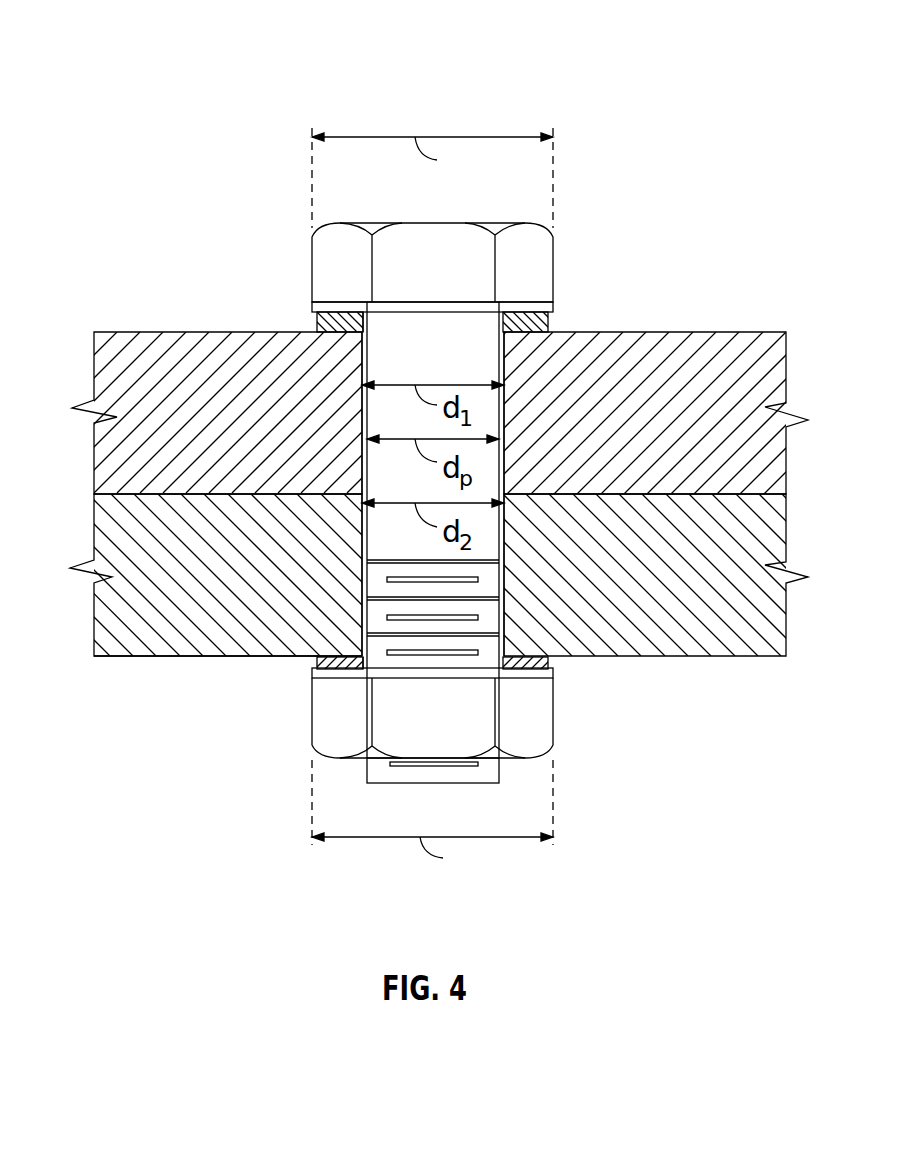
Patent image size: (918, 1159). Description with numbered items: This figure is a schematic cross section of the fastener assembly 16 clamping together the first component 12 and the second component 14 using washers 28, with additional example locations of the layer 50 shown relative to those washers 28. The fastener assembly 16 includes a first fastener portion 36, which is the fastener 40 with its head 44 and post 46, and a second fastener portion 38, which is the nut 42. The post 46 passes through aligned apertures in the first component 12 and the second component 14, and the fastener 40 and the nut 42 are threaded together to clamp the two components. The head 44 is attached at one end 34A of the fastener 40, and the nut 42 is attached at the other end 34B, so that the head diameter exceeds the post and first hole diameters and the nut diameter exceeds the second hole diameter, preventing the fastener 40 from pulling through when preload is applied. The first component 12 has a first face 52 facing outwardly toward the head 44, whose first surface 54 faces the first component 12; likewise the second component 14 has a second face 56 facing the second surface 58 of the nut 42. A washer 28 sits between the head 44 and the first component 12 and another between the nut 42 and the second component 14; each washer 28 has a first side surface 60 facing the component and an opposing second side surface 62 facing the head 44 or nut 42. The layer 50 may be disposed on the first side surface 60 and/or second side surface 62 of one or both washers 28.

The first component 12 is at (118, 465).
The second component 14 is at (117, 530).
The fastener assembly 16 is at (428, 496).
The washer 28 is at (530, 328).
The end of the fastener 34A is at (346, 88).
The another end of the fastener 34B is at (288, 822).
The first fastener portion 36 is at (428, 496).
The second fastener portion 38 is at (505, 727).
The fastener 40 is at (428, 496).
The nut 42 is at (545, 735).
The head 44 is at (556, 242).
The post 46 is at (412, 587).
The layer 50 is at (333, 302).
The first face 52 is at (295, 331).
The first surface 54 is at (553, 300).
The second face 56 is at (237, 657).
The second surface 58 is at (533, 657).
The first side surface 60 is at (337, 333).
The second side surface 62 is at (366, 322).